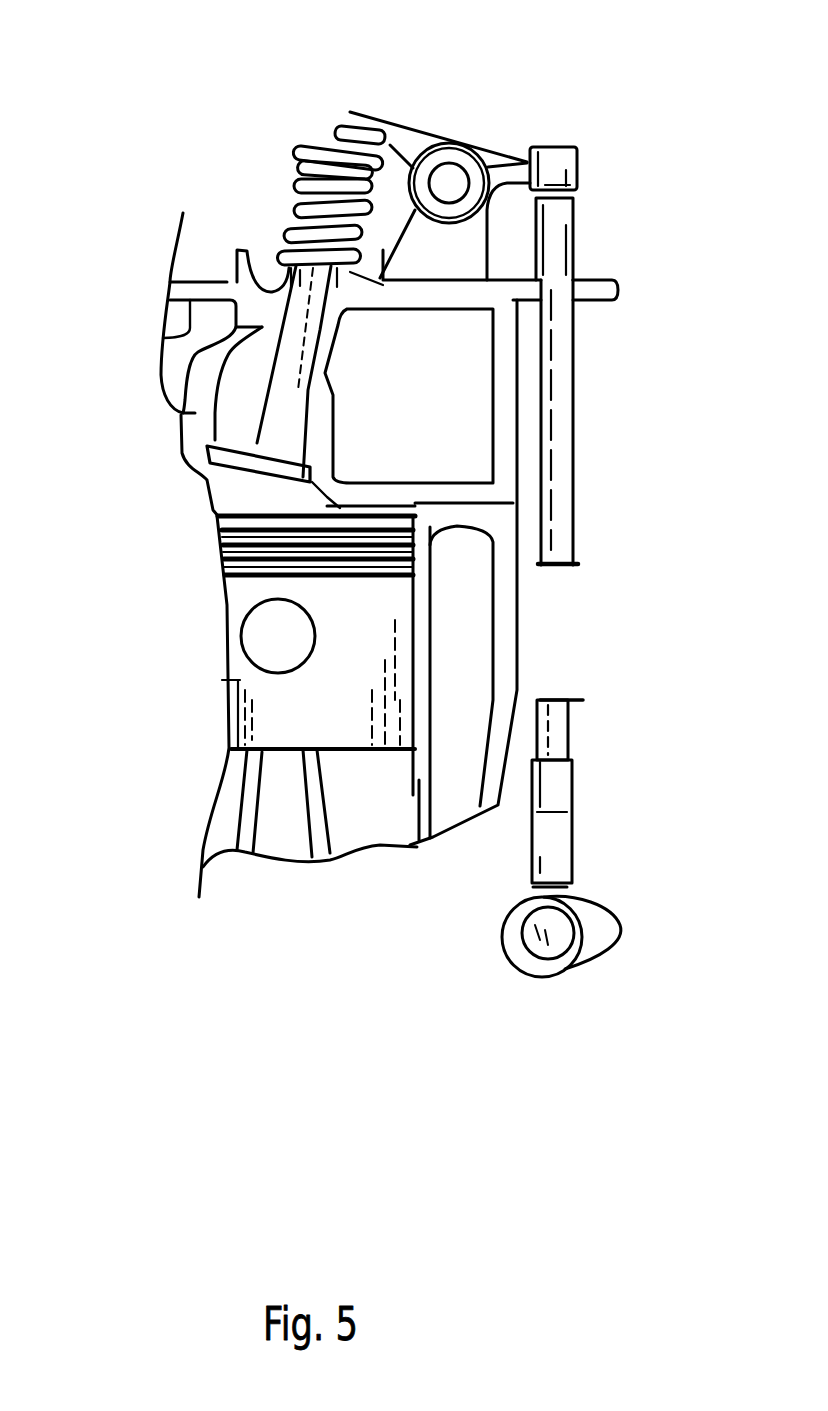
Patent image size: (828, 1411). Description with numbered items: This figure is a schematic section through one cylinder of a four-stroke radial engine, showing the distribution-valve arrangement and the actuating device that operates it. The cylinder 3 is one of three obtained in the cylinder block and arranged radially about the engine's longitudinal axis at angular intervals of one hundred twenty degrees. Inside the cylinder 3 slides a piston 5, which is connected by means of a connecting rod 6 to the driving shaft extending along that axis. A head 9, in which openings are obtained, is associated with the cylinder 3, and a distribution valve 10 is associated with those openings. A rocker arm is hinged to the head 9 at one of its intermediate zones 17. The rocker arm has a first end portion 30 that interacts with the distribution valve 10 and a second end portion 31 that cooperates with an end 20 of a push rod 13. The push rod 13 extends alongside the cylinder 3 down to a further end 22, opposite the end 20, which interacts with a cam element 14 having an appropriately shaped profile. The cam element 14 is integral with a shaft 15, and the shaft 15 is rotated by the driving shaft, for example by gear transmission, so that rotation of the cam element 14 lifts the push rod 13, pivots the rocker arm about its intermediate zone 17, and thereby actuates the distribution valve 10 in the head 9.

The cylinder 3 is at (420, 794).
The piston 5 is at (227, 682).
The connecting rod 6 is at (272, 817).
The head 9 is at (167, 338).
The distribution valve 10 is at (248, 247).
The push rod 13 is at (568, 443).
The cam element 14 is at (602, 932).
The shaft 15 is at (548, 940).
The intermediate zone 17 is at (460, 158).
The end 20 is at (565, 217).
The further end 22 is at (563, 845).
The first end portion 30 is at (363, 115).
The second end portion 31 is at (578, 168).